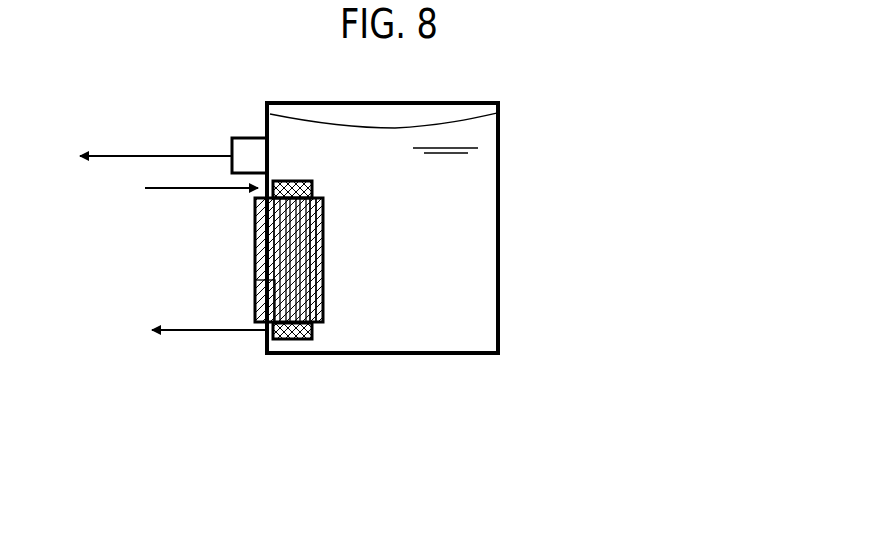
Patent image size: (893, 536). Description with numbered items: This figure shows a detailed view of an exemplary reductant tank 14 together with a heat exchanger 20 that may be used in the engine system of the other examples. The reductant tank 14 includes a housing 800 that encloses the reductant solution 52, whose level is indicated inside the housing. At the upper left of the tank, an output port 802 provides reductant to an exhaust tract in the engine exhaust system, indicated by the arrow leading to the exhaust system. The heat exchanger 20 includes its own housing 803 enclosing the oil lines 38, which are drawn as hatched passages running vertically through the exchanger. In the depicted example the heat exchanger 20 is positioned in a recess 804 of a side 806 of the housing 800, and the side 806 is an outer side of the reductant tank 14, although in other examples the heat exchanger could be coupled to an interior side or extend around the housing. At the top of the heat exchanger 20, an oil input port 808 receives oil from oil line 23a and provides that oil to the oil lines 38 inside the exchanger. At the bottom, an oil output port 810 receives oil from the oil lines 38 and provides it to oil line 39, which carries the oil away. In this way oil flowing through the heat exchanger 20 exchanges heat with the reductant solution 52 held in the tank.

The reductant tank 14 is at (552, 110).
The housing 800 is at (499, 166).
The reductant solution 52 is at (429, 252).
The output port 802 is at (250, 137).
The oil line 23a is at (156, 189).
The oil line 39 is at (190, 331).
The housing 803 is at (256, 206).
The oil lines 38 is at (284, 276).
The heat exchanger 20 is at (242, 306).
The recess 804 is at (328, 266).
The side 806 is at (250, 344).
The oil input port 808 is at (313, 189).
The oil output port 810 is at (314, 331).